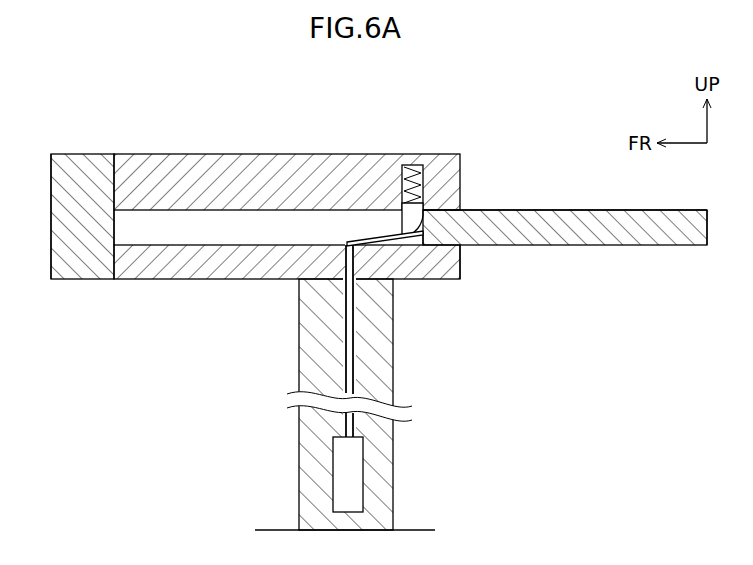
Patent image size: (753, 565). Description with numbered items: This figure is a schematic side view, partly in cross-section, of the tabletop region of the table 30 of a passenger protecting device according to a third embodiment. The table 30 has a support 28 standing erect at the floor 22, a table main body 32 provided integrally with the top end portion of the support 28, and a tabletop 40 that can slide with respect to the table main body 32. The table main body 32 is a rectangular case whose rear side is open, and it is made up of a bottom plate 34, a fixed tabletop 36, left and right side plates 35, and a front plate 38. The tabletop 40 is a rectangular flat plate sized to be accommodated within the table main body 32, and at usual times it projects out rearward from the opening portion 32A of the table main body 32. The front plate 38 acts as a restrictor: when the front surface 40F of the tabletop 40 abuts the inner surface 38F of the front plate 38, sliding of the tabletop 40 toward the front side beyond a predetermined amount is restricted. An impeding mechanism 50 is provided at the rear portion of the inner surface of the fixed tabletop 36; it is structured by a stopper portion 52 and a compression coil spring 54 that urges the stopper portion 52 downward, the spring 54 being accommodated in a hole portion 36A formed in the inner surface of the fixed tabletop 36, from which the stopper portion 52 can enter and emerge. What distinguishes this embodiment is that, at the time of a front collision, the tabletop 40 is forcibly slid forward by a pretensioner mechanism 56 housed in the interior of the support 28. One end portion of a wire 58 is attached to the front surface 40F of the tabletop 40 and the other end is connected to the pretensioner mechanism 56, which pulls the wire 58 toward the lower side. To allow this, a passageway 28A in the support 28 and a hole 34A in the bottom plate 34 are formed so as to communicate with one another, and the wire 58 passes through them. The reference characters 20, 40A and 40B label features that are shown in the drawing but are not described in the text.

The attachment structure 20 is at (228, 118).
The floor 22 is at (410, 528).
The support 28 is at (297, 369).
The passageway 28A is at (365, 357).
The table 30 is at (160, 136).
The table main body 32 is at (51, 150).
The opening portion 32A is at (462, 252).
The bottom plate 34 is at (213, 283).
The hole 34A is at (346, 244).
The side plates 35 is at (160, 235).
The fixed tabletop 36 is at (265, 150).
The hole portion 36A is at (405, 163).
The front plate 38 is at (48, 233).
The inner surface 38F is at (118, 232).
The tabletop 40 is at (562, 206).
The upper surface of plate 40A is at (426, 212).
The rear end of plate 40B is at (707, 247).
The front surface 40F is at (419, 246).
The impeding mechanism 50 is at (396, 226).
The stopper portion 52 is at (420, 207).
The compression coil spring 54 is at (418, 198).
The pretensioner mechanism 56 is at (357, 467).
The wire 58 is at (352, 378).